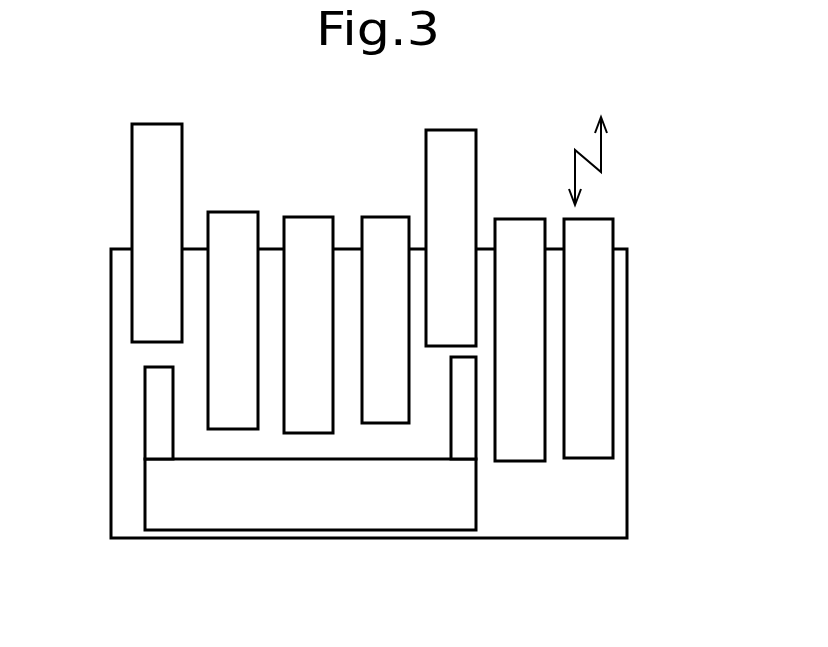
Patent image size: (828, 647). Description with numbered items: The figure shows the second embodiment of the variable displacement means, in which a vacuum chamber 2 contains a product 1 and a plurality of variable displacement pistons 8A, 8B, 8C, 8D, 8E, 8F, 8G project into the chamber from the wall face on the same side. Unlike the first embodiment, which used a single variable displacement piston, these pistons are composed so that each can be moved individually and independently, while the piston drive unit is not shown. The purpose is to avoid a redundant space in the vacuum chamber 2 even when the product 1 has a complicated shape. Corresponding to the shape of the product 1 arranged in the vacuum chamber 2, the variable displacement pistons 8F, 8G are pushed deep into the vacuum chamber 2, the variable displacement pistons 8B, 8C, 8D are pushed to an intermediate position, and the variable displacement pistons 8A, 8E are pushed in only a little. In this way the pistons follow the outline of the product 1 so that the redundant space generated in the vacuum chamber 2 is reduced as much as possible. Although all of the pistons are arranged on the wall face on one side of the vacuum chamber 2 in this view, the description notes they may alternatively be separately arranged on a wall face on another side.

The product 1 is at (380, 518).
The vacuum chamber 2 is at (627, 367).
The variable displacement piston 8A is at (157, 124).
The variable displacement piston 8B is at (235, 212).
The variable displacement piston 8C is at (310, 217).
The variable displacement piston 8D is at (383, 217).
The variable displacement piston 8E is at (445, 130).
The variable displacement piston 8F is at (515, 219).
The variable displacement piston 8G is at (605, 219).